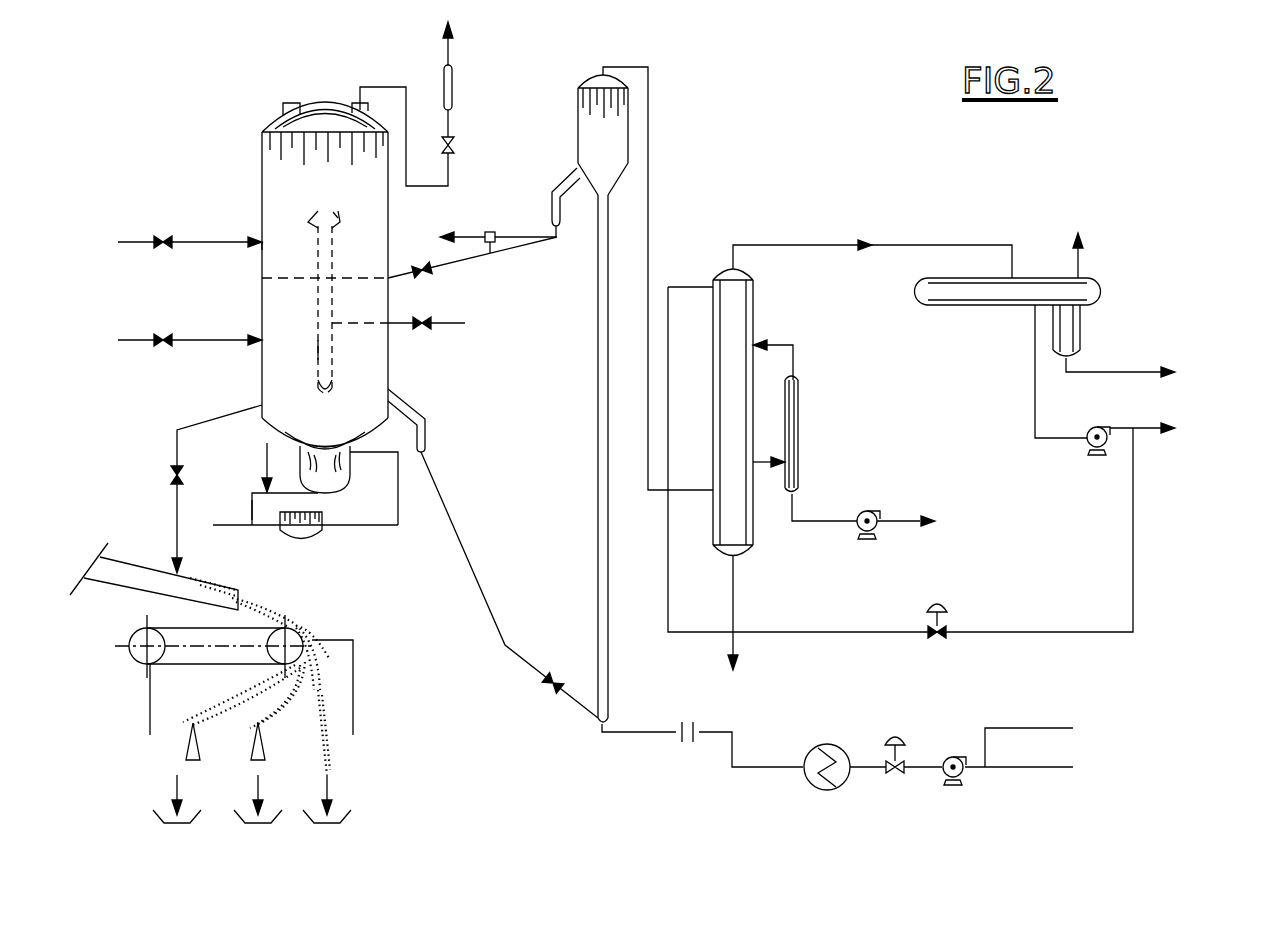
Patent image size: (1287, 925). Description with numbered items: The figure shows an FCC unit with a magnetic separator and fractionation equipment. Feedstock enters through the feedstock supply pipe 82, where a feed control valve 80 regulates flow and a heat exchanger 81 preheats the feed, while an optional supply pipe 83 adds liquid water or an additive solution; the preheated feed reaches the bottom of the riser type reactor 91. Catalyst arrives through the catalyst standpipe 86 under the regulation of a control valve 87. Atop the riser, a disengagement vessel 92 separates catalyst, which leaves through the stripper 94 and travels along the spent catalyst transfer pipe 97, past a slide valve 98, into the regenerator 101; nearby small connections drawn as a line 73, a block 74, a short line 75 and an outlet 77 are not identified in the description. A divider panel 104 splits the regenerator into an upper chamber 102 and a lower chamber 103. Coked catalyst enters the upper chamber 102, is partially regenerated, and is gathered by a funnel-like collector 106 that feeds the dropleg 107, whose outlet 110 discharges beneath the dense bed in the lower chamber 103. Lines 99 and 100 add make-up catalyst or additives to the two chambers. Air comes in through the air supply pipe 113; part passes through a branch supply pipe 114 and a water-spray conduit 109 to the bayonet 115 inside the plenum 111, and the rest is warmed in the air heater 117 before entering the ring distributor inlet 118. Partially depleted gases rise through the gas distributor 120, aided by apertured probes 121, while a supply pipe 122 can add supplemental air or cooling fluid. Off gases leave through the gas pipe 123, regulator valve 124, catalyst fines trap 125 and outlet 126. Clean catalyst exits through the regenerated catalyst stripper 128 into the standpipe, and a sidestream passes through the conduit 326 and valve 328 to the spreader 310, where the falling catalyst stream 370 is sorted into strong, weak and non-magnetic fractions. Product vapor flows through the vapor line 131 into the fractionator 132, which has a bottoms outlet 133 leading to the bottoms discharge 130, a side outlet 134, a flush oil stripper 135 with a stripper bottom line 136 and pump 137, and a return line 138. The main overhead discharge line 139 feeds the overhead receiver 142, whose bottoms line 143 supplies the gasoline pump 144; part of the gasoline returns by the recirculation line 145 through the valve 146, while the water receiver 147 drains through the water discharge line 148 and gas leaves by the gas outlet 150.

The stripper outlet line 73 is at (560, 235).
The junction block 74 is at (490, 230).
The connecting line 75 is at (493, 248).
The outlet arrow line 77 is at (452, 238).
The feed control valve 80 is at (895, 776).
The heat exchanger 81 is at (805, 780).
The feedstock supply pipe 82 is at (750, 768).
The supply pipe 83 is at (1040, 728).
The catalyst standpipe 86 is at (520, 655).
The control valve 87 is at (548, 686).
The riser type reactor 91 is at (607, 668).
The disengagement vessel 92 is at (578, 105).
The stripper 94 is at (565, 185).
The spent catalyst transfer pipe 97 is at (527, 247).
The slide valve 98 is at (428, 272).
The line 99 is at (140, 240).
The line 100 is at (140, 338).
The regenerator 101 is at (375, 360).
The upper chamber 102 is at (318, 222).
The lower chamber 103 is at (340, 318).
The divider panel 104 is at (352, 278).
The funnel-like collector 106 is at (337, 224).
The dropleg 107 is at (318, 352).
The conduit 109 is at (265, 460).
The outlet 110 is at (322, 395).
The plenum 111 is at (300, 465).
The air supply pipe 113 is at (225, 528).
The branch supply pipe 114 is at (252, 507).
The bayonet 115 is at (333, 475).
The air heater 117 is at (305, 538).
The inlet 118 is at (400, 455).
The gas distributor 120 is at (298, 282).
The apertured probes 121 is at (300, 258).
The supply pipe 122 is at (445, 323).
The gas pipe 123 is at (383, 87).
The regulator valve 124 is at (452, 148).
The catalyst fines trap 125 is at (452, 95).
The outlet 126 is at (445, 50).
The regenerated catalyst stripper 128 is at (425, 430).
The bottoms outlet 130 is at (738, 640).
The vapor line 131 is at (648, 110).
The fractionator 132 is at (713, 400).
The bottoms outlet 133 is at (735, 598).
The side outlet 134 is at (770, 462).
The flush oil stripper 135 is at (800, 410).
The stripper bottom line 136 is at (798, 505).
The pump 137 is at (862, 530).
The line 138 is at (790, 345).
The main overhead discharge line 139 is at (900, 245).
The overhead receiver 142 is at (915, 292).
The bottoms line 143 is at (1035, 388).
The pump 144 is at (1088, 445).
The recirculation line 145 is at (1135, 540).
The valve 146 is at (940, 636).
The water receiver 147 is at (1083, 330).
The water discharge line 148 is at (1120, 374).
The gas outlet 150 is at (1080, 262).
The spreader 310 is at (142, 565).
The conduit 326 is at (177, 442).
The valve 328 is at (170, 478).
The catalyst particle stream 370 is at (285, 625).